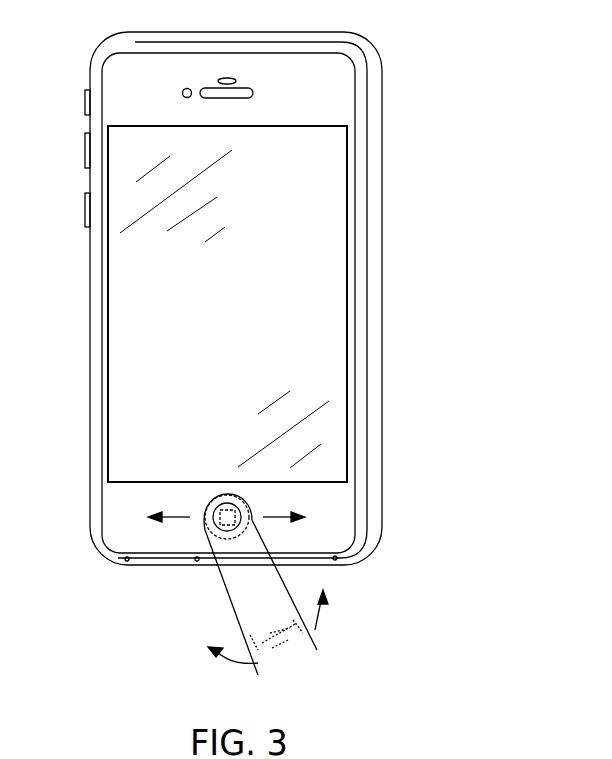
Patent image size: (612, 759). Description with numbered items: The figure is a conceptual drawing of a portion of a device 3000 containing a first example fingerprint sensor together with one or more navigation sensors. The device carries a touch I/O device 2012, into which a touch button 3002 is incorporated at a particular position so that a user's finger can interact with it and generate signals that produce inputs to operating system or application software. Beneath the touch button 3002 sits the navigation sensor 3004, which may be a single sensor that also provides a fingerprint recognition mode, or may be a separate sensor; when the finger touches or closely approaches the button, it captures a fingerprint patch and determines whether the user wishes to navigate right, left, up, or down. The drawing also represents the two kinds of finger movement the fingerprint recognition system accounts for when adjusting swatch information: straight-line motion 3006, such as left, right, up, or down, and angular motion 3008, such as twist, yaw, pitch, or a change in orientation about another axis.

The electronic device 3000 is at (413, 228).
The touch I/O device 2012 is at (315, 142).
The touch button 3002 is at (197, 505).
The straight-line motion 3006 is at (277, 505).
The navigation sensor 3004 is at (225, 528).
The angular motion 3008 is at (322, 625).